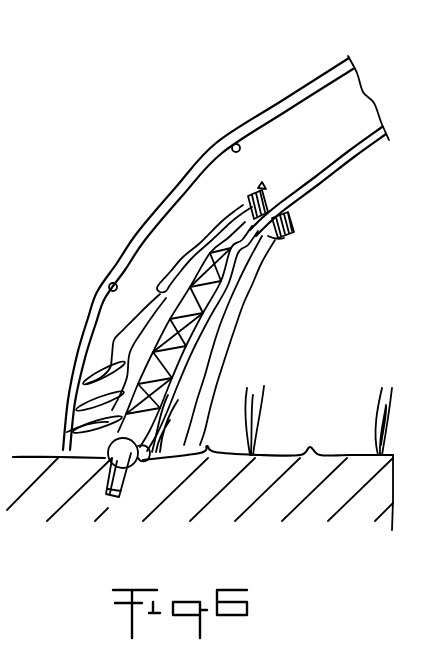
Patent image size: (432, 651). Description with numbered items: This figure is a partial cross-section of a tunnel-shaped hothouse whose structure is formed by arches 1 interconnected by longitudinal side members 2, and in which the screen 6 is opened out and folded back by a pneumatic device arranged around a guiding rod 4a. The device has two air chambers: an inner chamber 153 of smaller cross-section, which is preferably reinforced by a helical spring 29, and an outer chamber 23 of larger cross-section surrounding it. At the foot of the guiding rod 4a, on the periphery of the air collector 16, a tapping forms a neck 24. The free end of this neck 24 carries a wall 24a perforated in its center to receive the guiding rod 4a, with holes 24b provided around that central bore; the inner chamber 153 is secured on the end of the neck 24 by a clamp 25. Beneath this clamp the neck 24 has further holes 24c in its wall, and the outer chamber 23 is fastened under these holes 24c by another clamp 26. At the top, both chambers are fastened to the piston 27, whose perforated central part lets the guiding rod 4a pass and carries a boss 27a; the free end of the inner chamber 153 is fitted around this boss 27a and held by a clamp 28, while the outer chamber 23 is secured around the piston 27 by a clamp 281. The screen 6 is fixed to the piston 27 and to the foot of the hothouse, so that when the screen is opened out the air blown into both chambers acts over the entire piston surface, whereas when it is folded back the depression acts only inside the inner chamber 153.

The arches 1 is at (308, 82).
The longitudinal side members 2 is at (240, 148).
The guiding rods 4a is at (349, 156).
The screen 6 is at (194, 240).
The air chamber of smaller cross-section 153 is at (222, 318).
The air collector 16 is at (133, 467).
The air chamber of larger cross-section 23 is at (250, 274).
The neck 24 is at (147, 442).
The wall 24a is at (122, 430).
The holes 24b is at (152, 408).
The holes 24c is at (115, 429).
The clamp 25 is at (125, 410).
The clamp 26 is at (112, 434).
The piston 27 is at (293, 232).
The boss 27a is at (274, 240).
The clamp 28 is at (246, 205).
The clamp 281 is at (250, 197).
The helical spring 29 is at (233, 347).